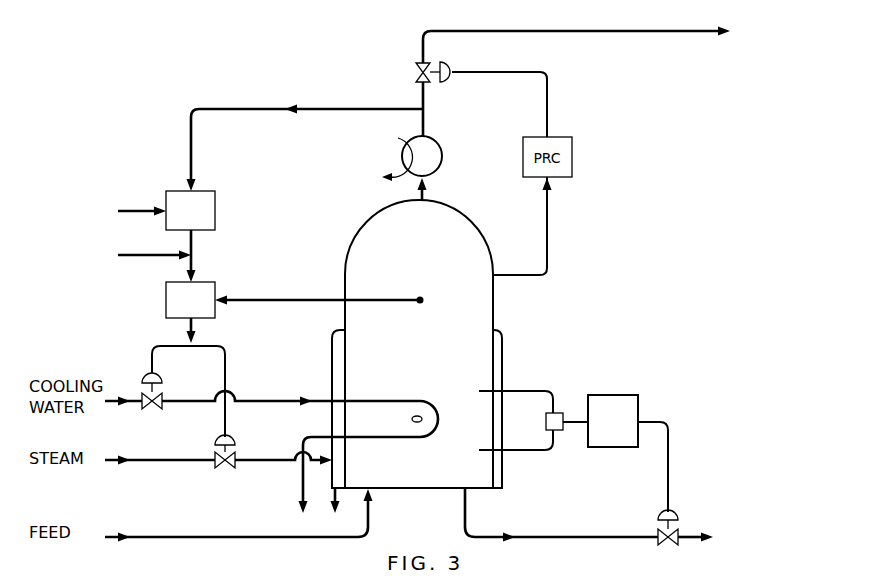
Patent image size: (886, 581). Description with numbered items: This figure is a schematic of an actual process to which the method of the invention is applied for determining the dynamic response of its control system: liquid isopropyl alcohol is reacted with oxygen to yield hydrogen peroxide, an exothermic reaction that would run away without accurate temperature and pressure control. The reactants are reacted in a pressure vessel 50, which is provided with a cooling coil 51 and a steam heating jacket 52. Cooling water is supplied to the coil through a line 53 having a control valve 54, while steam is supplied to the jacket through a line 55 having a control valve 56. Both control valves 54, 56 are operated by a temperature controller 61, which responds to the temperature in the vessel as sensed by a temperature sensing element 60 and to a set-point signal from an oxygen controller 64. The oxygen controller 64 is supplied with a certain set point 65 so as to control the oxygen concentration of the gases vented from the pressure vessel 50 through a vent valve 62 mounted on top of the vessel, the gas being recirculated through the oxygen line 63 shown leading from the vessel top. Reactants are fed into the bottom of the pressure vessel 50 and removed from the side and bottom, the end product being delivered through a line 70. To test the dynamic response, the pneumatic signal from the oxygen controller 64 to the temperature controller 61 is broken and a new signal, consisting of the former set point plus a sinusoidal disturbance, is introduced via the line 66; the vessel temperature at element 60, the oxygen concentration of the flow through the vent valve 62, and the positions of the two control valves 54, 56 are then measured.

The pressure vessel 50 is at (410, 352).
The cooling coil 51 is at (420, 400).
The steam heating jacket 52 is at (332, 345).
The line 53 is at (252, 401).
The control valve 54 is at (150, 405).
The line 55 is at (248, 460).
The control valve 56 is at (221, 466).
The temperature sensing element 60 is at (419, 297).
The temperature controller 61 is at (166, 290).
The vent valve 62 is at (417, 70).
The oxygen analyzer line 63 is at (320, 112).
The oxygen controller 64 is at (207, 192).
The set point 65 is at (135, 210).
The line 66 is at (157, 252).
The line 70 is at (567, 537).